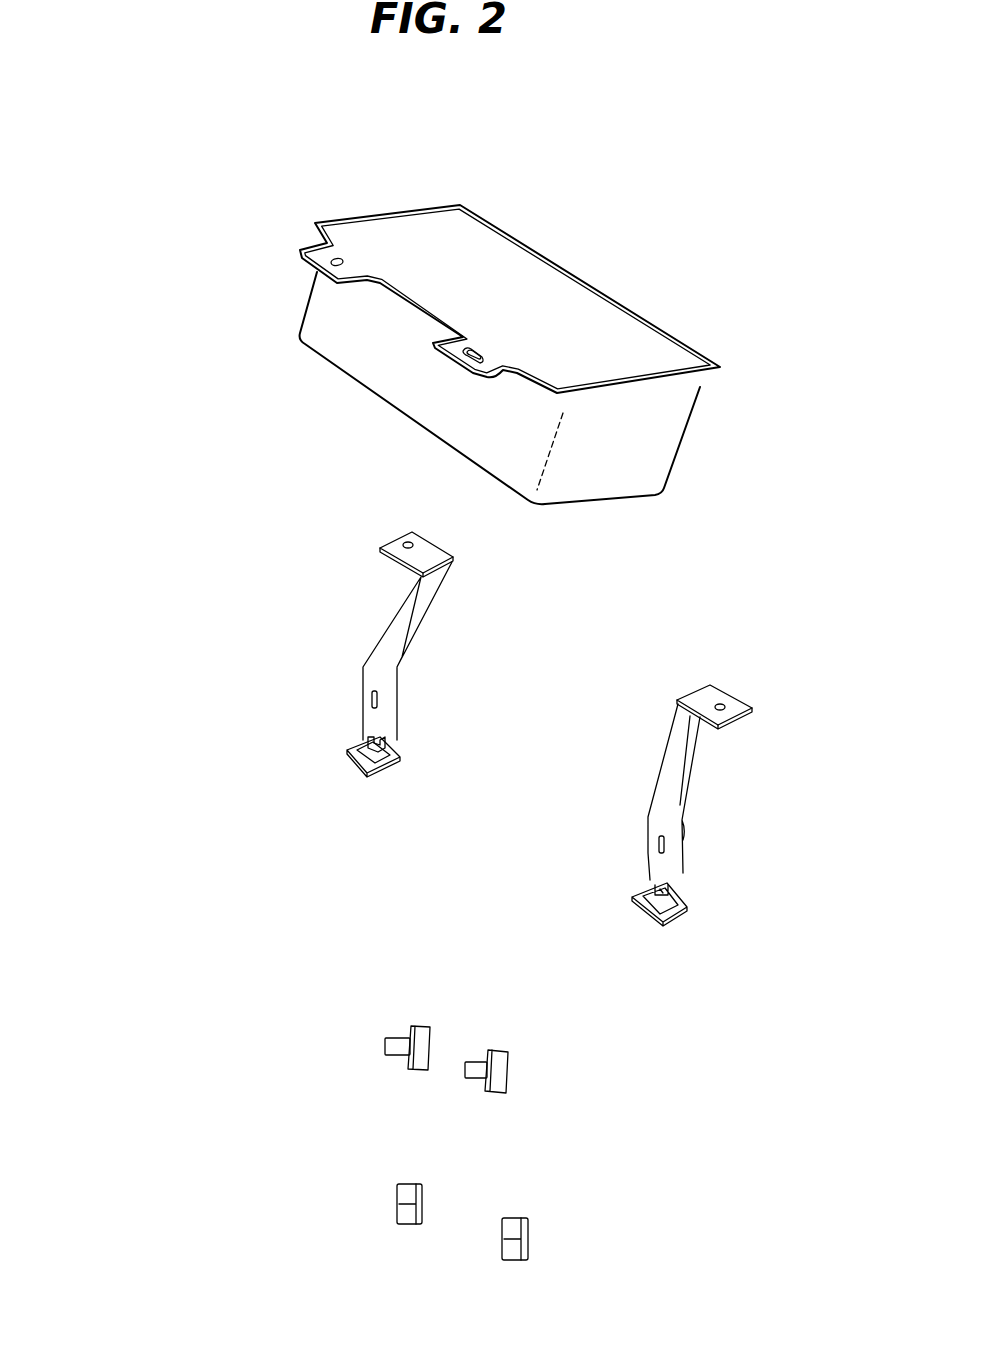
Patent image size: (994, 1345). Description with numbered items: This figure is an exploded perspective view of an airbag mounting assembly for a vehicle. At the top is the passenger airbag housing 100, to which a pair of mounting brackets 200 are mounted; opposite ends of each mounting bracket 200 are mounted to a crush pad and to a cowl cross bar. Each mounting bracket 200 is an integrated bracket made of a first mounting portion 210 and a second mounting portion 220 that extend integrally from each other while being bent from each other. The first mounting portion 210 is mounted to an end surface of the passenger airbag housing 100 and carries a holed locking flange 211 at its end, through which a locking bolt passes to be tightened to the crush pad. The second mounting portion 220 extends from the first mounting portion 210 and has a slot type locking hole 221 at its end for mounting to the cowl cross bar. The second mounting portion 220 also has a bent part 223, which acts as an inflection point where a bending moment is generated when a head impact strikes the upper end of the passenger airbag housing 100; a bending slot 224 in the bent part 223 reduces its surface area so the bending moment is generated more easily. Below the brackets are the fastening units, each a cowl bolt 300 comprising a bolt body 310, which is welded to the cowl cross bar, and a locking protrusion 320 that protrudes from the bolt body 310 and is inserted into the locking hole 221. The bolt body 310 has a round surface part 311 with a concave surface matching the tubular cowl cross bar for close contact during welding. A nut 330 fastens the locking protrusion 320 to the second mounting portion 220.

The passenger airbag housing 100 is at (345, 343).
The mounting bracket 200 is at (602, 613).
The first mounting portion 210 is at (397, 629).
The locking flange 211 is at (412, 537).
The second mounting portion 220 is at (377, 654).
The locking hole 221 is at (383, 756).
The bent part 223 is at (363, 683).
The bending slot 224 is at (365, 740).
The cowl bolt 300 is at (341, 1123).
The bolt body 310 is at (399, 1060).
The round surface part 311 is at (481, 1028).
The locking protrusion 320 is at (387, 1047).
The nut 330 is at (400, 1192).